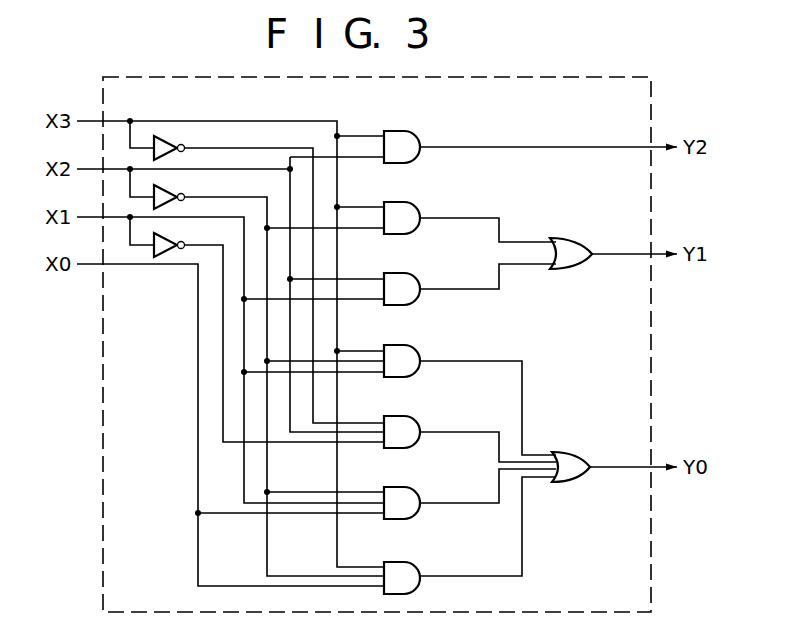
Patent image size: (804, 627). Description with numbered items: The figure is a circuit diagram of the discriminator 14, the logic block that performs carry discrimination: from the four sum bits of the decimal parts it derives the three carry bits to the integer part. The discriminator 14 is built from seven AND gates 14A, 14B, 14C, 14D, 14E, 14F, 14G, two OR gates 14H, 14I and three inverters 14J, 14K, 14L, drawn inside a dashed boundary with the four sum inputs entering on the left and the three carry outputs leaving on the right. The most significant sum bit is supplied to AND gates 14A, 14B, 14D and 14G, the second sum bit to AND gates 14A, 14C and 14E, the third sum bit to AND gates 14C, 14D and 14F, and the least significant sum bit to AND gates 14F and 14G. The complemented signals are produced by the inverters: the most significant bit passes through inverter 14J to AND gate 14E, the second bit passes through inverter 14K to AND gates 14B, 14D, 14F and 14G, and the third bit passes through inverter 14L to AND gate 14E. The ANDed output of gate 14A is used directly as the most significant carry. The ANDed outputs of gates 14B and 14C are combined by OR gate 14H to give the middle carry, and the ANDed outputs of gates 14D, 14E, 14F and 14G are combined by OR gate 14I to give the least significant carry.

The discriminator 14 is at (651, 98).
The AND gate 14A is at (415, 135).
The AND gate 14B is at (415, 206).
The AND gate 14C is at (415, 277).
The AND gate 14D is at (415, 349).
The AND gate 14E is at (415, 420).
The AND gate 14F is at (415, 491).
The AND gate 14G is at (415, 566).
The OR gate 14H is at (580, 238).
The OR gate 14I is at (578, 452).
The inverter 14J is at (184, 144).
The inverter 14K is at (184, 193).
The inverter 14L is at (184, 242).